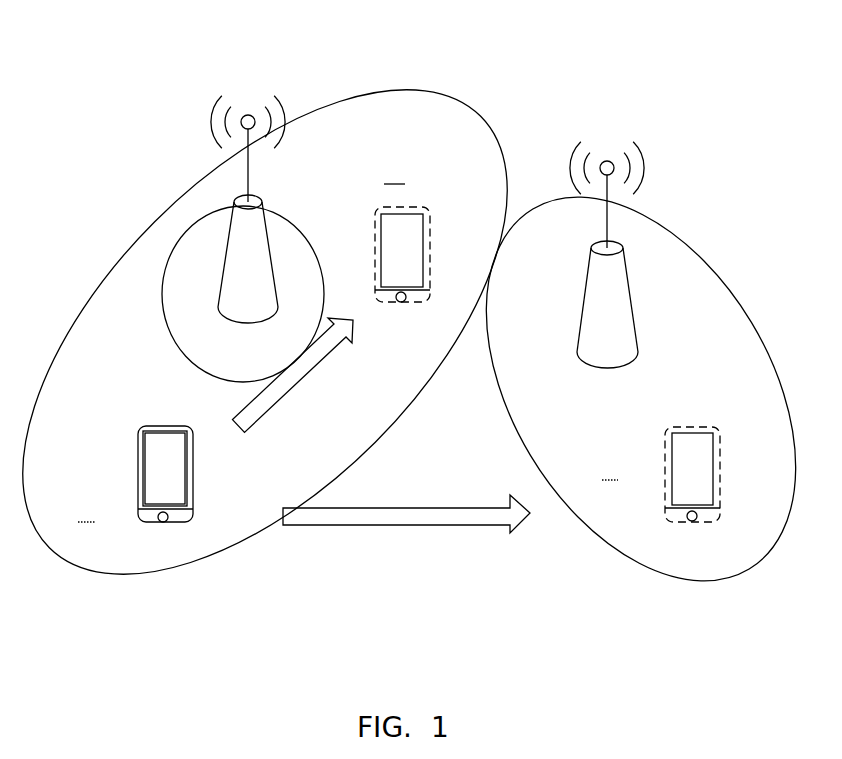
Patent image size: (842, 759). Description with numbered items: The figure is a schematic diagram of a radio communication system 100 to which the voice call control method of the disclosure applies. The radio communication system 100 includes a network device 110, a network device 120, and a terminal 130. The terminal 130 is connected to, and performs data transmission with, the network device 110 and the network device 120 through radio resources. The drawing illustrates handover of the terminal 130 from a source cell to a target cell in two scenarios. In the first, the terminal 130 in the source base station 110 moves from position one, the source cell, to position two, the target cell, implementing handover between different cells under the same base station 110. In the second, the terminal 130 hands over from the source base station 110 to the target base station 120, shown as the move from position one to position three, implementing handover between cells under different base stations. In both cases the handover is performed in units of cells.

The radio communication system 100 is at (592, 18).
The network device 110 is at (250, 88).
The network device 120 is at (628, 138).
The terminal 130 is at (188, 512).